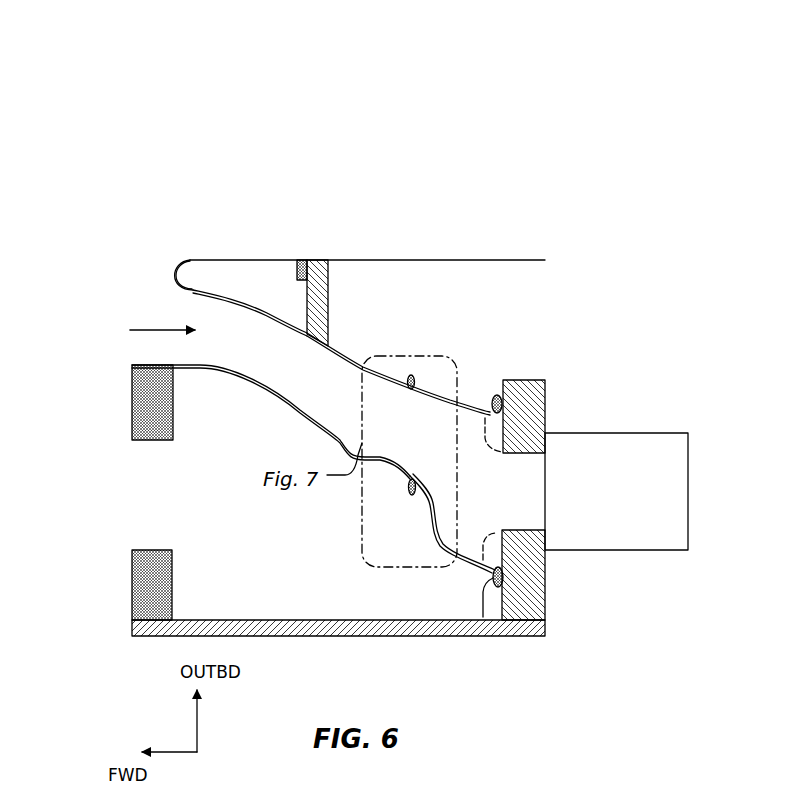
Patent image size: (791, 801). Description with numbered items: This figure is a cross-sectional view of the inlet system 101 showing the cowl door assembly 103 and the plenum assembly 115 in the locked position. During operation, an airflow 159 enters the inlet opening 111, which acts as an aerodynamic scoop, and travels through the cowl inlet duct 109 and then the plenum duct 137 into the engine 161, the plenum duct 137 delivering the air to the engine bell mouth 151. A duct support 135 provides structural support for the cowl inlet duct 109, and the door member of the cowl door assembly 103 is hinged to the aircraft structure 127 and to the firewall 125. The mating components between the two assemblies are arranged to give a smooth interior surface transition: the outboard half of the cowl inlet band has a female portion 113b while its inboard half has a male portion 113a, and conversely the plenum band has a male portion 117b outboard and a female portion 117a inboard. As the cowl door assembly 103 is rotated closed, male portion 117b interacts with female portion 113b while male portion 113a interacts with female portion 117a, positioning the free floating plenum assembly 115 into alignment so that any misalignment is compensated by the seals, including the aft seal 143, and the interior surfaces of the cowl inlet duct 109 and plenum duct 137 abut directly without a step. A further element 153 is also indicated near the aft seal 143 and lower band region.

The inlet system 101 is at (390, 82).
The cowl door assembly 103 is at (250, 432).
The cowl inlet duct 109 is at (231, 301).
The inlet opening 111 is at (178, 274).
The male portion of cowl inlet band 113a is at (407, 478).
The female portion of cowl inlet band 113b is at (410, 380).
The plenum assembly 115 is at (458, 605).
The female portion of plenum band 117a is at (411, 476).
The male portion of plenum band 117b is at (414, 385).
The firewall 125 is at (545, 397).
The aircraft structure 127 is at (131, 423).
The duct support 135 is at (327, 280).
The plenum duct 137 is at (447, 551).
The aft seal 143 is at (500, 587).
The engine bell mouth 151 is at (488, 447).
The lower seal clip 153 is at (484, 620).
The airflow 159 is at (153, 329).
The engine 161 is at (600, 433).